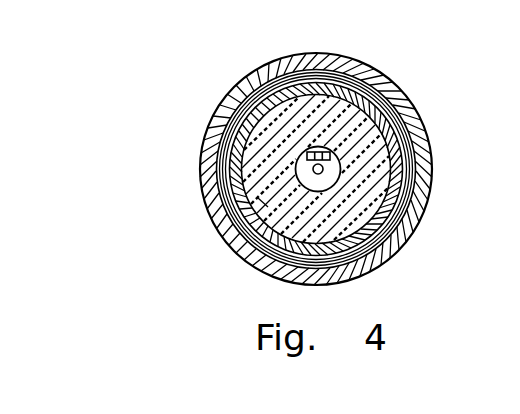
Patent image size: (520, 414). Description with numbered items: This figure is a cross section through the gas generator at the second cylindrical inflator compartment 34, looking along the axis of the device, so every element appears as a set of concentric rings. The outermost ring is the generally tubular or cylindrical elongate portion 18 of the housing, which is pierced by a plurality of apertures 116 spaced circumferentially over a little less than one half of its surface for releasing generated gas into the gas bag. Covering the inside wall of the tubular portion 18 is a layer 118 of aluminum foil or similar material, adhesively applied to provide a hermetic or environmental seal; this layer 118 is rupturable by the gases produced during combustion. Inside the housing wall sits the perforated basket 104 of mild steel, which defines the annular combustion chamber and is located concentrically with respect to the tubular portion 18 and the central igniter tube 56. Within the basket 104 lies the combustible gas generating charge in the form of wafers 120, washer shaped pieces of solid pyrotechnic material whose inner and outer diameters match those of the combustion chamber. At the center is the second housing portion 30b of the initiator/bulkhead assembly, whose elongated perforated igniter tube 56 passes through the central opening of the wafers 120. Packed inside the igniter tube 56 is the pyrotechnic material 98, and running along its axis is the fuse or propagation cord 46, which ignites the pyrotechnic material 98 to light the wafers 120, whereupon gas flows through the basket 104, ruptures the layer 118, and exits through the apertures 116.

The tubular portion 18 is at (375, 78).
The apertures 116 is at (420, 124).
The layer 118 is at (399, 117).
The perforated basket 104 is at (400, 164).
The second cylindrical inflator compartment 34 is at (270, 137).
The wafers 120 is at (380, 193).
The igniter tube 56 is at (268, 207).
The fuse cord 46 is at (312, 170).
The pyrotechnic material 98 is at (312, 152).
The second housing portion 30b is at (317, 151).